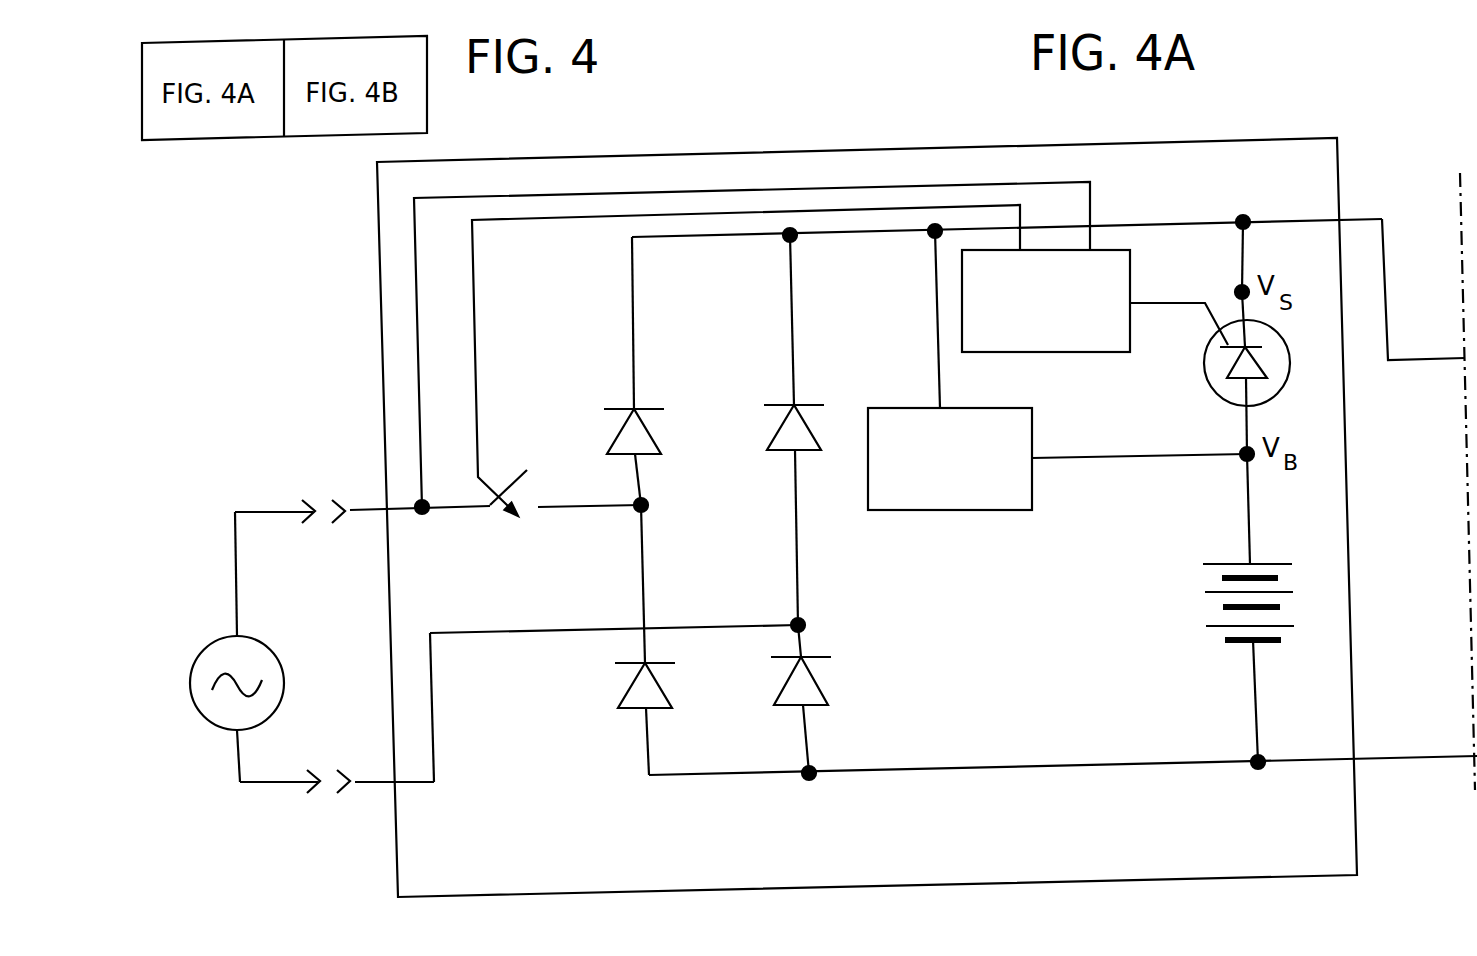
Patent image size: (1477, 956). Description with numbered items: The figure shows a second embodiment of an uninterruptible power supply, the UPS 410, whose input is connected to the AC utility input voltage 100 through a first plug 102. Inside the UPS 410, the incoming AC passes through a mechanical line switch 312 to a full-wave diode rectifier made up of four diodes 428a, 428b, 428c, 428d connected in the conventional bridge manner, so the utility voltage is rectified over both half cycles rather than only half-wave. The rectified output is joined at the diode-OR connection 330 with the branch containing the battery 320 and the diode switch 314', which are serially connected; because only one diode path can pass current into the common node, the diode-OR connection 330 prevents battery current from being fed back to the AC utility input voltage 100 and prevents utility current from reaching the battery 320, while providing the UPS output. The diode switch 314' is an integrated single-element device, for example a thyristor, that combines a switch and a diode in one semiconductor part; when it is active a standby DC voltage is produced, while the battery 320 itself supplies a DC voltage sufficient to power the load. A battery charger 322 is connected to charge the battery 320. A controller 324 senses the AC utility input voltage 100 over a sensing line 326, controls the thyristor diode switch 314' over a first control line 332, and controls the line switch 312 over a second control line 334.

The AC utility input voltage 100 is at (197, 658).
The first plug 102 is at (318, 536).
The line switch 312 is at (522, 497).
The diode switch 314' is at (1219, 373).
The battery 320 is at (1215, 603).
The battery charger 322 is at (977, 510).
The controller 324 is at (1078, 352).
The sensing line 326 is at (1092, 197).
The diode-OR connection 330 is at (1247, 215).
The first control line 332 is at (1168, 302).
The second control line 334 is at (578, 220).
The UPS 410 is at (805, 150).
The diode 428a is at (618, 438).
The diode 428b is at (819, 441).
The diode 428c is at (633, 692).
The diode 428d is at (823, 687).